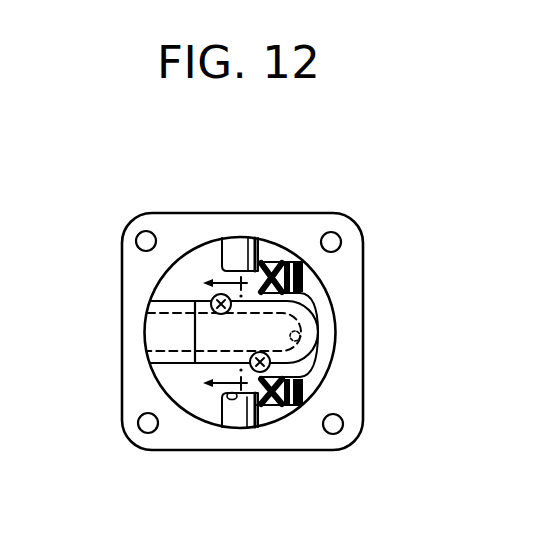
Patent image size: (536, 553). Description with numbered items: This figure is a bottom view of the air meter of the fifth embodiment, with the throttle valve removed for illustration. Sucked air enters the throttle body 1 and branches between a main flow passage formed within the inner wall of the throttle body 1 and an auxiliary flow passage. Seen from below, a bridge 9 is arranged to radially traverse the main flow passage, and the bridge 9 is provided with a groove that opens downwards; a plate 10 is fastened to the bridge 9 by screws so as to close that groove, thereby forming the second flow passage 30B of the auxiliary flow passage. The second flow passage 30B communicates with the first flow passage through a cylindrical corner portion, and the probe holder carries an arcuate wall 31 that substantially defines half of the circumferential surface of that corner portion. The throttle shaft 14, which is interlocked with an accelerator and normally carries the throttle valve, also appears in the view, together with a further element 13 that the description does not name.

The throttle body 1 is at (121, 268).
The bridge 9 is at (172, 307).
The plate 10 is at (208, 343).
The guide groove 13 is at (157, 333).
The throttle shaft 14 is at (270, 247).
The second flow passage 30B is at (173, 342).
The arcuate wall 31 is at (300, 339).